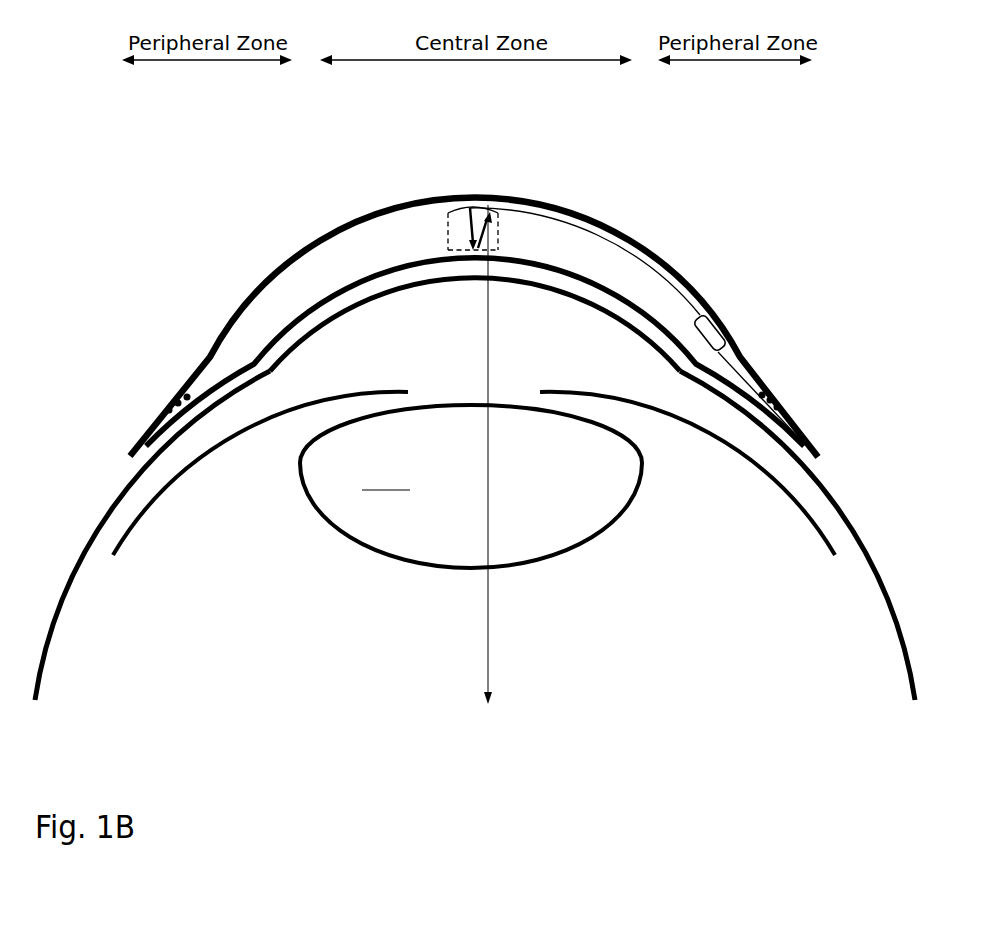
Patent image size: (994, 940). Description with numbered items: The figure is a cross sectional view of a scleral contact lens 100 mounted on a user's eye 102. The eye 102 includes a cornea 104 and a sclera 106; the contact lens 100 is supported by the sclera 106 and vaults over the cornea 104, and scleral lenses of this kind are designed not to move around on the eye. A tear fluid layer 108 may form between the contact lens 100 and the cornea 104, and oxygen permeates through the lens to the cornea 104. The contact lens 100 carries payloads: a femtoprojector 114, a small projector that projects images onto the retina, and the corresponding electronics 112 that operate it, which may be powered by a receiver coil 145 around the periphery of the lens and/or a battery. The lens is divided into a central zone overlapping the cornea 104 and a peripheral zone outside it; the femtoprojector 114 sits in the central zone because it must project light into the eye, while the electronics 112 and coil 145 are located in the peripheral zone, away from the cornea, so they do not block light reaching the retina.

The scleral contact lens 100 is at (447, 197).
The eye 102 is at (475, 474).
The cornea 104 is at (377, 299).
The sclera 106 is at (157, 448).
The tear fluid layer 108 is at (337, 301).
The electronics 112 is at (724, 333).
The femtoprojector 114 is at (503, 224).
The receiver coil 145 is at (784, 398).